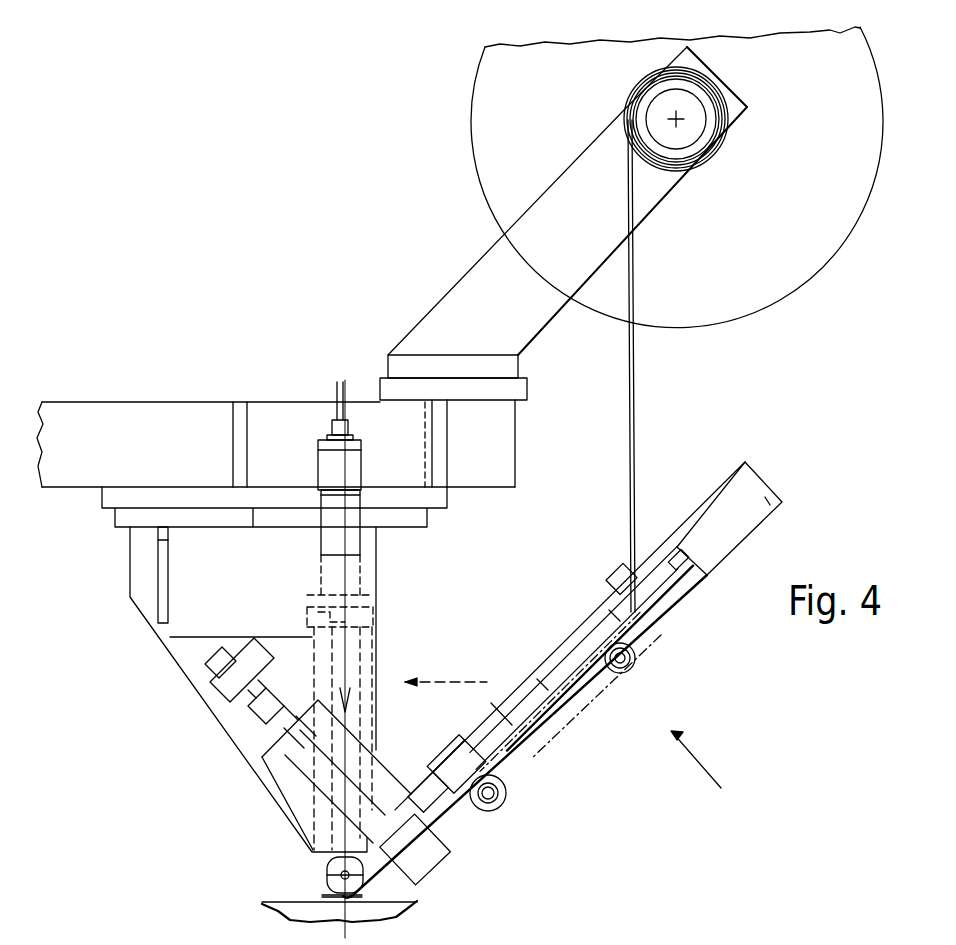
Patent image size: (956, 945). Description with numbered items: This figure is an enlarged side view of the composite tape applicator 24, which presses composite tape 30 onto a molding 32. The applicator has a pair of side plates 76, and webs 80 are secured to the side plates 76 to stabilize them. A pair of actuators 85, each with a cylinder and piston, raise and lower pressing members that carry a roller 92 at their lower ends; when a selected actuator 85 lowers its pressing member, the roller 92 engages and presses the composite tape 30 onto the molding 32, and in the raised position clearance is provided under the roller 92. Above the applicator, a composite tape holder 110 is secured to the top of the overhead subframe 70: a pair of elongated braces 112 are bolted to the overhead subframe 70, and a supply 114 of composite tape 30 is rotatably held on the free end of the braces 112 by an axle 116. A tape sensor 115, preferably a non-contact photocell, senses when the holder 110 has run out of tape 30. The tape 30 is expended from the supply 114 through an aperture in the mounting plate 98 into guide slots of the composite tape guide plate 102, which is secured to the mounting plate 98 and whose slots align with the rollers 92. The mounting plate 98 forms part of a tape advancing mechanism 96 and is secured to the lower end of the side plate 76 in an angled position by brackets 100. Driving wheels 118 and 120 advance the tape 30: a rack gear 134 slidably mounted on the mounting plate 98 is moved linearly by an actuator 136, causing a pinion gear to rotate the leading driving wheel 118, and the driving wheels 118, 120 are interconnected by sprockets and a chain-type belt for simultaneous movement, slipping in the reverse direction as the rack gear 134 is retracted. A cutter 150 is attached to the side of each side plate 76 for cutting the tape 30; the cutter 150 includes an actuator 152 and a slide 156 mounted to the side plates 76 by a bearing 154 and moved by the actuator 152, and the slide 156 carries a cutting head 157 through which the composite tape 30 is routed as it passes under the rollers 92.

The composite tape applicator 24 is at (327, 259).
The composite tape 30 is at (634, 395).
The molding 32 is at (416, 916).
The overhead subframe 70 is at (190, 401).
The side plates 76 is at (178, 652).
The webs 80 is at (158, 578).
The actuators 85 is at (316, 462).
The roller 92 is at (330, 877).
The tape advancing mechanism 96 is at (753, 533).
The mounting plate 98 is at (748, 458).
The brackets 100 is at (385, 768).
The composite tape guide plate 102 is at (557, 672).
The composite tape holder 110 is at (867, 44).
The elongated braces 112 is at (462, 278).
The supply of composite tape 114 is at (712, 156).
The tape sensor 115 is at (560, 71).
The axle 116 is at (682, 117).
The leading driving wheel 118 is at (633, 670).
The driving wheel 120 is at (508, 804).
The rack gear 134 is at (661, 603).
The actuator 136 is at (762, 497).
The cutter 150 is at (453, 852).
The actuator 152 is at (263, 722).
The bearing 154 is at (287, 780).
The slide 156 is at (300, 744).
The cutting head 157 is at (438, 878).